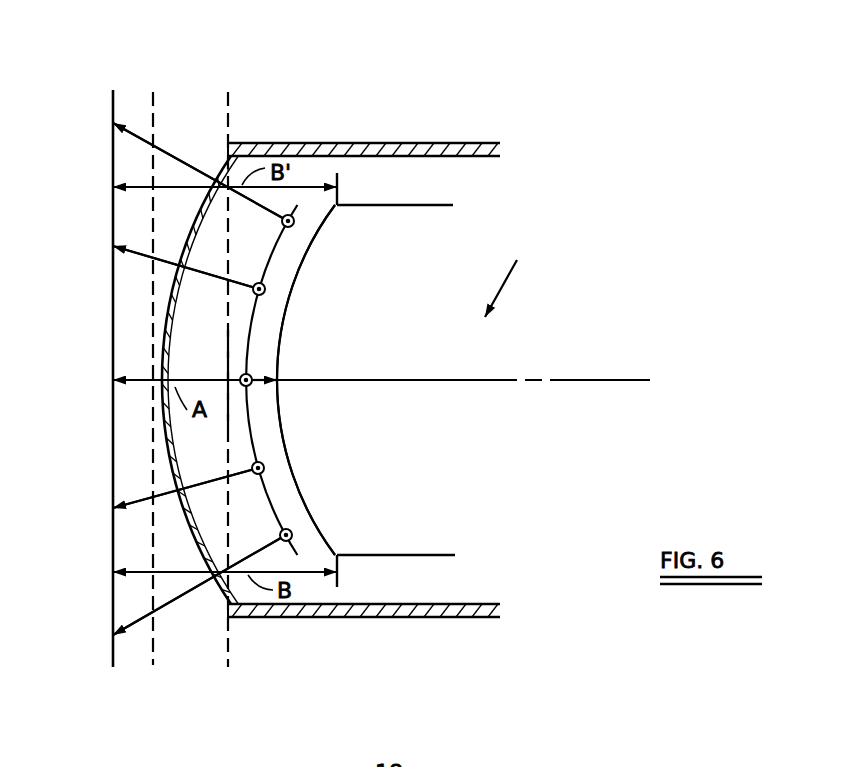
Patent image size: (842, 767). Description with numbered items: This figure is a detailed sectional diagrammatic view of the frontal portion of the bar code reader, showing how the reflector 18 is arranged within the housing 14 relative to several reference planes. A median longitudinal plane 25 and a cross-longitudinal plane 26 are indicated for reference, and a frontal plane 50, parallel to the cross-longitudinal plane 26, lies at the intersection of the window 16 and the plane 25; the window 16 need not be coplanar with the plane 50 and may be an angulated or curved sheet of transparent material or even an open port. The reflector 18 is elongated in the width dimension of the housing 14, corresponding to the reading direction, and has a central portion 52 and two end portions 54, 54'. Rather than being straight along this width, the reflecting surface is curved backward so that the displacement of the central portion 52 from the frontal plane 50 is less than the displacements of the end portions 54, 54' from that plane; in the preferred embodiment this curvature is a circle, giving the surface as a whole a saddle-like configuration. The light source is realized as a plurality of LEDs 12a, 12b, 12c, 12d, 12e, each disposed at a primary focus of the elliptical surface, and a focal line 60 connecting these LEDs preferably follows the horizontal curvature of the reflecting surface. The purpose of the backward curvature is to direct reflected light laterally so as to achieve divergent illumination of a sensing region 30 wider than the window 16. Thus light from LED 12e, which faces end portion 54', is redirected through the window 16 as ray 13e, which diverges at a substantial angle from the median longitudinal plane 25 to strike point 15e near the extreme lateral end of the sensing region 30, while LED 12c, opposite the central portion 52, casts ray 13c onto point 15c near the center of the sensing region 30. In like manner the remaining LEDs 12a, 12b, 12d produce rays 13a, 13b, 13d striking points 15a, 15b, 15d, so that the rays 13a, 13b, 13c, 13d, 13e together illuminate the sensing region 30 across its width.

The frontal plane 50 is at (155, 102).
The cross-longitudinal plane 26 is at (230, 102).
The housing 14 is at (334, 143).
The window 16 is at (190, 247).
The reflector 18 is at (288, 273).
The focal line 60 is at (252, 330).
The central portion 52 is at (280, 388).
The end portion 54' is at (398, 186).
The end portion 54 is at (401, 573).
The sensing region 30 is at (506, 275).
The median longitudinal plane 25 is at (227, 377).
The light emitting diode 12a is at (293, 224).
The light emitting diode 12b is at (264, 292).
The light emitting diode 12c is at (250, 373).
The light emitting diode 12d is at (264, 467).
The light emitting diode 12e is at (300, 523).
The point 15a is at (113, 123).
The point 15b is at (113, 246).
The point 15c is at (113, 380).
The point 15d is at (110, 514).
The point 15e is at (113, 635).
The light ray 13a is at (137, 137).
The light ray 13b is at (136, 254).
The light ray 13c is at (137, 383).
The light ray 13d is at (140, 503).
The light ray 13e is at (140, 622).